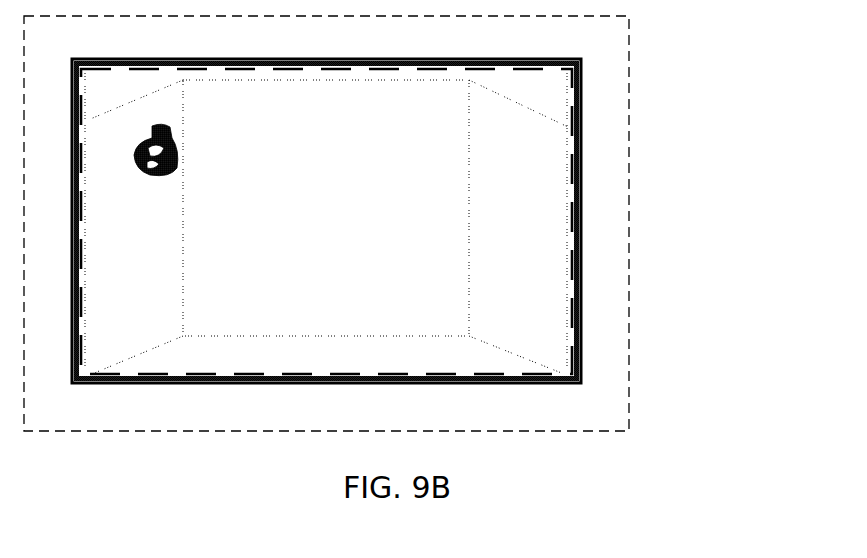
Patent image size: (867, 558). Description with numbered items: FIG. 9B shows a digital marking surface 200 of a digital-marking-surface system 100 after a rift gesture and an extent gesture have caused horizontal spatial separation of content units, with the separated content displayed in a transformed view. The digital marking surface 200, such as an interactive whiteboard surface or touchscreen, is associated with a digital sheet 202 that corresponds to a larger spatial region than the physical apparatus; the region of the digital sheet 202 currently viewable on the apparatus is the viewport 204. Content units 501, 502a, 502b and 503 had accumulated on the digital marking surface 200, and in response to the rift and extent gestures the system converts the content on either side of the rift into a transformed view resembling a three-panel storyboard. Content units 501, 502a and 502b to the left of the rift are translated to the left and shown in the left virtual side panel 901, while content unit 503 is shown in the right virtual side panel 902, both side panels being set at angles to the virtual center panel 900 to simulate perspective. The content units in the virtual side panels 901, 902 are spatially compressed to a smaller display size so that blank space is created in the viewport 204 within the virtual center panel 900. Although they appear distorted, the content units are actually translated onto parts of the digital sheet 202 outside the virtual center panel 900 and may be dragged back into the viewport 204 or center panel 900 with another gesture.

The digital-marking-surface system 100 is at (590, 86).
The digital marking surface 200 is at (476, 368).
The digital sheet 202 is at (638, 35).
The viewport 204 is at (582, 159).
The content unit 501 is at (102, 124).
The content unit 502a is at (175, 119).
The content unit 502b is at (186, 292).
The content unit 503 is at (483, 136).
The virtual center panel 900 is at (341, 328).
The virtual side panel 901 is at (121, 242).
The virtual side panel 902 is at (518, 226).